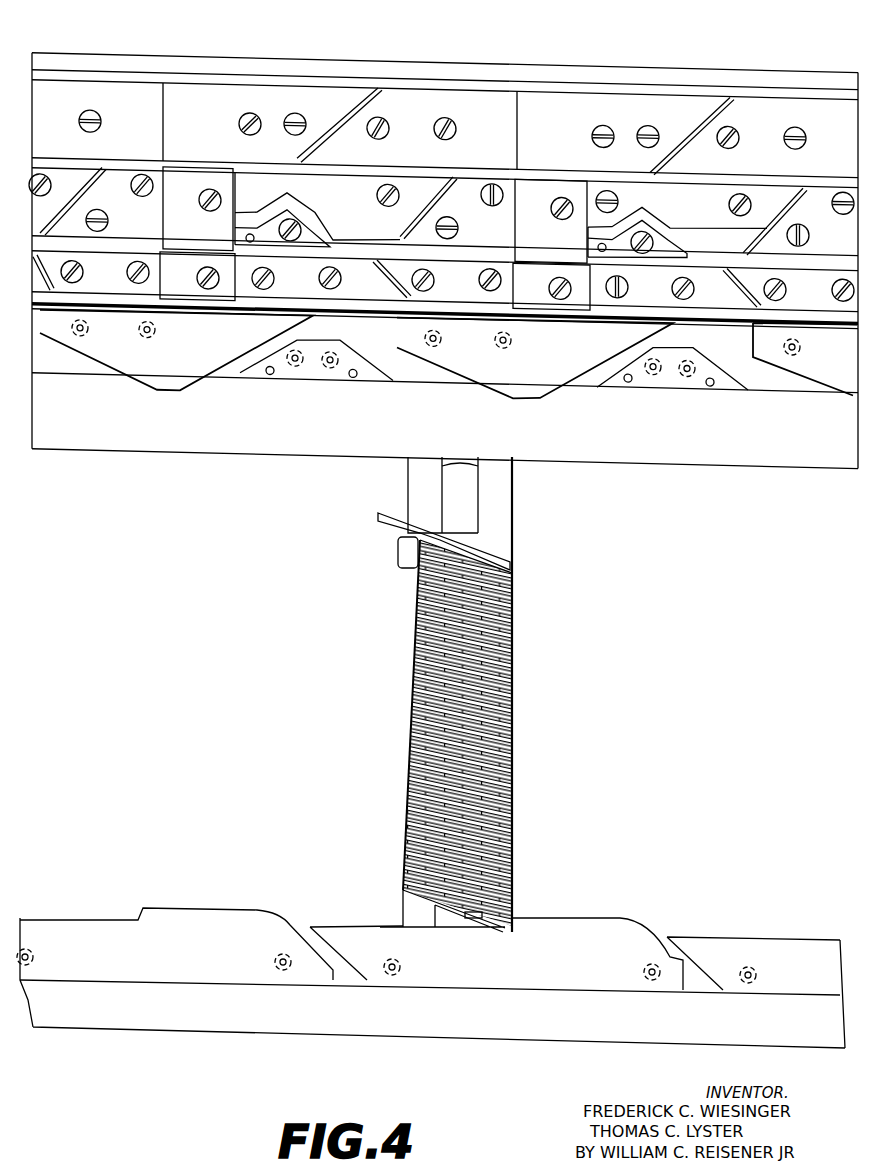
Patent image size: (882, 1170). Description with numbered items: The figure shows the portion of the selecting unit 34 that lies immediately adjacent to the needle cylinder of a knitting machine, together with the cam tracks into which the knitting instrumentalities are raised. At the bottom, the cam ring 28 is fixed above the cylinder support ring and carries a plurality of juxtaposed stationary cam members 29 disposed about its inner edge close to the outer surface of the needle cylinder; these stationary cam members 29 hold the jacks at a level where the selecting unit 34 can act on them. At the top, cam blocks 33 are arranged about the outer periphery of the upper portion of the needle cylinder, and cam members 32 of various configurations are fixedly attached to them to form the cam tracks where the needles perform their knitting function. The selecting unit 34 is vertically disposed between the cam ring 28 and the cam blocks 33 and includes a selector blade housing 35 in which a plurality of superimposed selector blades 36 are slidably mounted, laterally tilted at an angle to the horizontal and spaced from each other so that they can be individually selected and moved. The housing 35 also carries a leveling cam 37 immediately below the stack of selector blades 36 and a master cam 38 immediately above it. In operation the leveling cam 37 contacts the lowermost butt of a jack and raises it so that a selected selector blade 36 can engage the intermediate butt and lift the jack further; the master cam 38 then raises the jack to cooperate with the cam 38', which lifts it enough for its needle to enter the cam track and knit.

The cam block 33 is at (447, 62).
The cam member 32 is at (192, 230).
The cam 38' is at (316, 377).
The master cam 38 is at (435, 526).
The selector blade housing 35 is at (506, 533).
The selecting unit 34 is at (500, 733).
The selector blades 36 is at (503, 584).
The leveling cam 37 is at (480, 916).
The stationary cam member 29 is at (323, 933).
The cam ring 28 is at (447, 1024).